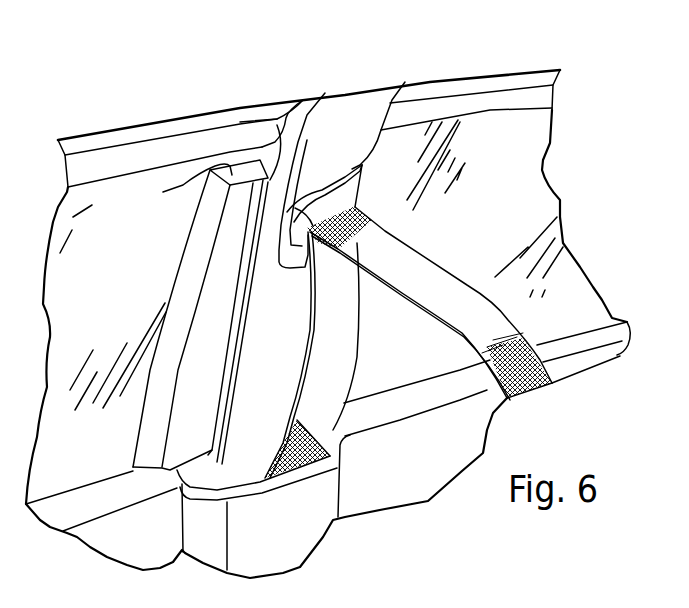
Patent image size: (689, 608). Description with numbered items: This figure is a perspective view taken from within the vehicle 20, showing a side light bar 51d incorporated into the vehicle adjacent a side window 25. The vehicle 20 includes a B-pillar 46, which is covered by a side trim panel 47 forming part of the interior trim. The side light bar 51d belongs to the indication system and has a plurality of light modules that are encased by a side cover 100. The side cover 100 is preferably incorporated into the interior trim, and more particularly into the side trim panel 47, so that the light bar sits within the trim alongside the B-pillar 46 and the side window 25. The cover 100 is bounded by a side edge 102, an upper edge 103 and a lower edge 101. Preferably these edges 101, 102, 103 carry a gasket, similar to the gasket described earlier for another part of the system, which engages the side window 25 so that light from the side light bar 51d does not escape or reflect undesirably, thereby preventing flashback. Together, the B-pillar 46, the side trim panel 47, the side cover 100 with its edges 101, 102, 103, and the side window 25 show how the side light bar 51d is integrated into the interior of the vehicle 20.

The vehicle 20 is at (401, 68).
The side window 25 is at (107, 323).
The B-pillar 46 is at (287, 307).
The side trim panel 47 is at (260, 442).
The side light bar 51d is at (196, 144).
The side cover 100 is at (237, 240).
The lower edge 101 is at (177, 489).
The side edge 102 is at (175, 263).
The upper edge 103 is at (163, 192).